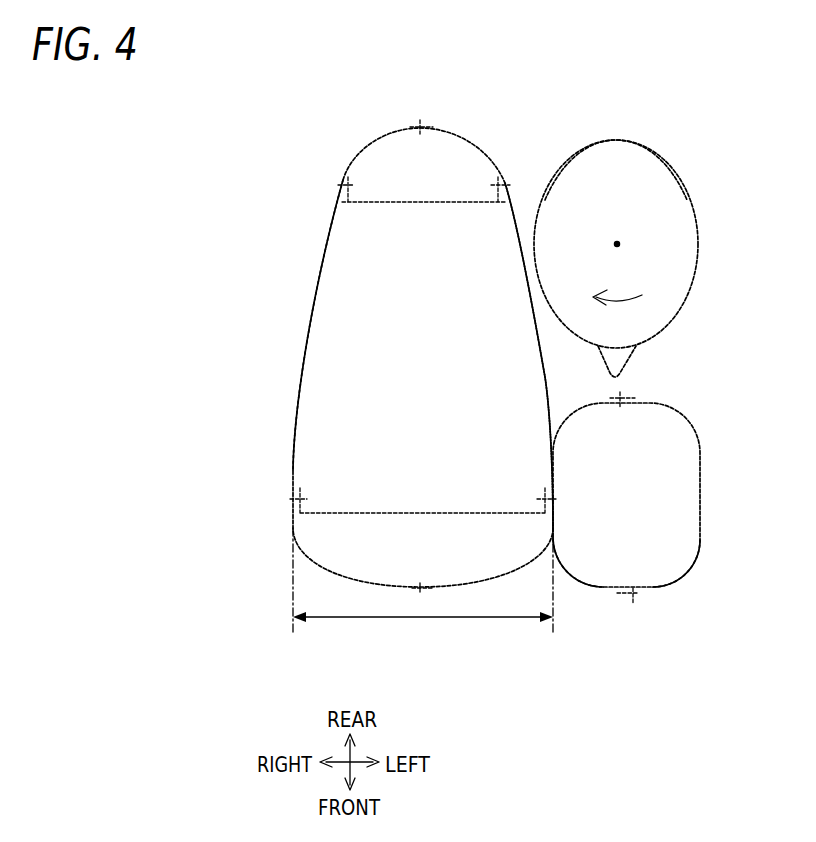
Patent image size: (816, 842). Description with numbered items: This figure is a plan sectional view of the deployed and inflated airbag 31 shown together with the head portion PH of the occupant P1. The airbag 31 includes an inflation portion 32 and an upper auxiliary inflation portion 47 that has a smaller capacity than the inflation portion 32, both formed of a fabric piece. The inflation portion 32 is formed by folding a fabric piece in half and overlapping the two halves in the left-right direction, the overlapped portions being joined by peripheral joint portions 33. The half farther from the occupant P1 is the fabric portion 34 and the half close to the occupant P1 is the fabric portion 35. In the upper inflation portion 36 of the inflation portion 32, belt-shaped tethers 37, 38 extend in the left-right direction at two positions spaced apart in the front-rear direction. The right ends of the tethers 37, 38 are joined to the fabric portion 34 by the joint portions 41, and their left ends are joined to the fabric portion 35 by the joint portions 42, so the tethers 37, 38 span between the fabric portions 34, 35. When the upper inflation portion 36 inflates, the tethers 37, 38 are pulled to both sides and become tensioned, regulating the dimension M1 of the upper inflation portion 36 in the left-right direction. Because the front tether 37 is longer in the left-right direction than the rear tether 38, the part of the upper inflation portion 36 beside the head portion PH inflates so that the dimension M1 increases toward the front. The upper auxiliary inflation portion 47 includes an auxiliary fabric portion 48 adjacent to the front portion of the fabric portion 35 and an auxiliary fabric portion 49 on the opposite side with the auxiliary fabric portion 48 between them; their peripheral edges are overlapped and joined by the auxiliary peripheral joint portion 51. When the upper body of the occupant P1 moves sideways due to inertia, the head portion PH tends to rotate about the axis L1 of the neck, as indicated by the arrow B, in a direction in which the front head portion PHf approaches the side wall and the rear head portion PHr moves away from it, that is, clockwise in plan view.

The airbag 31 is at (420, 128).
The inflation portion 32 is at (276, 113).
The peripheral joint portions 33 is at (433, 127).
The fabric portion 34 is at (296, 429).
The fabric portion 35 is at (545, 378).
The upper inflation portion 36 is at (343, 153).
The front tether 37 is at (395, 514).
The rear tether 38 is at (420, 203).
The joint portions 41 is at (338, 185).
The joint portions 42 is at (505, 186).
The upper auxiliary inflation portion 47 is at (703, 441).
The auxiliary fabric portion 48 is at (603, 587).
The auxiliary fabric portion 49 is at (660, 587).
The auxiliary peripheral joint portion 51 is at (635, 397).
The dimension M1 is at (375, 618).
The head portion PH is at (640, 141).
The occupant P1 is at (643, 136).
The rear head portion PHr is at (590, 157).
The front head portion PHf is at (640, 338).
The axis L1 is at (617, 244).
The arrow B is at (620, 303).